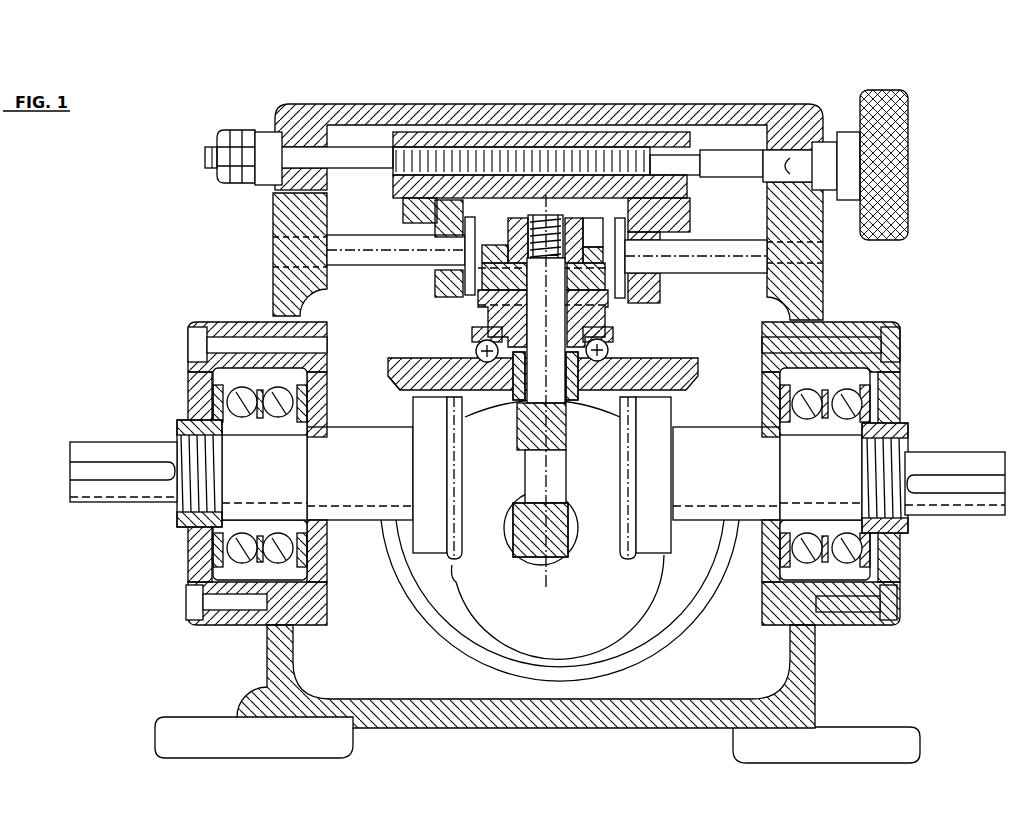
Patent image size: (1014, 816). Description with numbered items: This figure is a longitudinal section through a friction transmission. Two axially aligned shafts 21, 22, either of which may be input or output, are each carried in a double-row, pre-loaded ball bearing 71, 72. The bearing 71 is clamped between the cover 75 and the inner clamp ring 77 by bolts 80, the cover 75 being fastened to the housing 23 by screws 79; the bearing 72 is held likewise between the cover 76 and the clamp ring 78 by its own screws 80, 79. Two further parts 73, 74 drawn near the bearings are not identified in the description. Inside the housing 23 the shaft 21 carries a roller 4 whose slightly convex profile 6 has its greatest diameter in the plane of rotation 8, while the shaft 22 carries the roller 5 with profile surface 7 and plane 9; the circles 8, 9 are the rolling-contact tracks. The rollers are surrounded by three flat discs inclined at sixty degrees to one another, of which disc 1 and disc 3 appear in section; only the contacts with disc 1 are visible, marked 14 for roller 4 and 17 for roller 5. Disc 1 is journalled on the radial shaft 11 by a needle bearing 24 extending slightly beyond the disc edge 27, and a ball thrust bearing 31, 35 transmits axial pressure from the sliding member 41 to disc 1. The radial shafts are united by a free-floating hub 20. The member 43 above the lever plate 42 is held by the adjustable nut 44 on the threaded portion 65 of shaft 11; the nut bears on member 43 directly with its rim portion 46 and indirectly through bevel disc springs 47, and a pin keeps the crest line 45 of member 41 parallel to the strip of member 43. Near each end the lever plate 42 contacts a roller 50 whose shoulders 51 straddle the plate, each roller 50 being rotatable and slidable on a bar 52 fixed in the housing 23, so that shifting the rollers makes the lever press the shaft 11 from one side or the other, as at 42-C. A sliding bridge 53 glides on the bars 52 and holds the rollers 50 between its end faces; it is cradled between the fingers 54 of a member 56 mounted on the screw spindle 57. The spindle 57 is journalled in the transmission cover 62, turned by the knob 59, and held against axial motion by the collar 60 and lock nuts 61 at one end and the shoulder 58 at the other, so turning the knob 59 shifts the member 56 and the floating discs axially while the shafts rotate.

The disc 1 is at (390, 370).
The disc 3 is at (598, 615).
The roller 4 is at (655, 540).
The roller 5 is at (428, 535).
The convex profile 6 is at (640, 565).
The profile surface 7 is at (448, 562).
The plane of rotation 8 is at (622, 582).
The plane of greatest cross section 9 is at (453, 580).
The radial shaft 11 is at (562, 380).
The contact point 14 is at (702, 376).
The contact point 17 is at (410, 358).
The carrier or hub 20 is at (530, 540).
The shaft 21 is at (957, 502).
The shaft 22 is at (105, 495).
The housing 23 is at (802, 676).
The needle bearing 24 is at (515, 362).
The edge of disc 27 is at (452, 387).
The ball thrust bearing 31 is at (606, 352).
The ball thrust bearing 35 is at (612, 337).
The sliding member 41 is at (482, 312).
The lever plate 42 is at (437, 282).
The lever plate pressing location 42-C is at (632, 284).
The member 43 is at (482, 266).
The adjustable nut 44 is at (514, 240).
The crest line 45 is at (545, 236).
The rim portion 46 is at (449, 218).
The bevel disc springs 47 is at (505, 250).
The roller 50 is at (593, 234).
The shoulders 51 is at (466, 243).
The bar 52 is at (763, 257).
The sliding bridge 53 is at (410, 204).
The fingers 54 is at (408, 215).
The member 56 is at (550, 135).
The screw spindle 57 is at (580, 152).
The shoulder 58 is at (820, 135).
The knob 59 is at (893, 128).
The collar 60 is at (250, 178).
The lock nuts 61 is at (230, 140).
The transmission cover 62 is at (282, 118).
The threaded portion 65 is at (545, 222).
The ball bearing 71 is at (860, 392).
The ball bearing 72 is at (230, 376).
The output pinion 73 is at (908, 440).
The input pinion 74 is at (180, 513).
The cover 75 is at (897, 572).
The cover 76 is at (205, 568).
The inner clamp ring 77 is at (792, 326).
The clamp ring 78 is at (305, 320).
The screws 79 is at (194, 602).
The bolts 80 is at (195, 348).